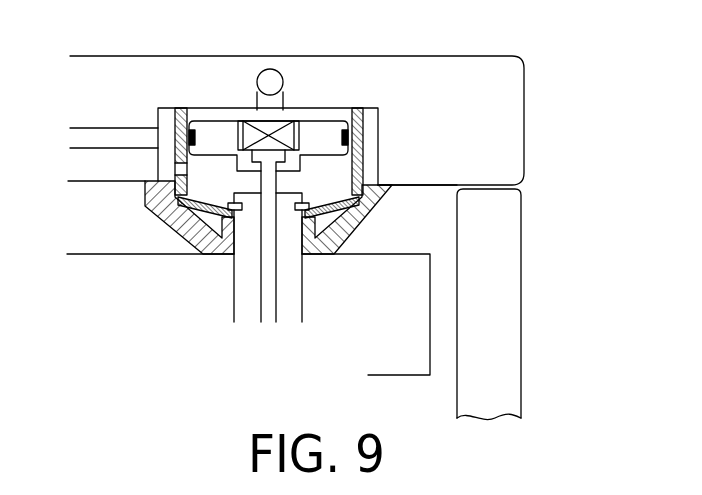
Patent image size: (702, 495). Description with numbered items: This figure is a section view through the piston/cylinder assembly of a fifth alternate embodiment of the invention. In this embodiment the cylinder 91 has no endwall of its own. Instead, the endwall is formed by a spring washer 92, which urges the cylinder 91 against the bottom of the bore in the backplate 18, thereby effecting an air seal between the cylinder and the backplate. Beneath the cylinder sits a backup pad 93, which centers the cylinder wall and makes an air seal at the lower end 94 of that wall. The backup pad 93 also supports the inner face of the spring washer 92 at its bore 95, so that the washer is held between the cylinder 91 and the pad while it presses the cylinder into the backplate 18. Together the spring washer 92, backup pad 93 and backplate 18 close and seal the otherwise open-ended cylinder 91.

The backplate 18 is at (495, 95).
The cylinder 91 is at (363, 136).
The spring washer 92 is at (351, 226).
The backup pad 93 is at (172, 252).
The lower end 94 is at (410, 185).
The bore 95 is at (236, 215).